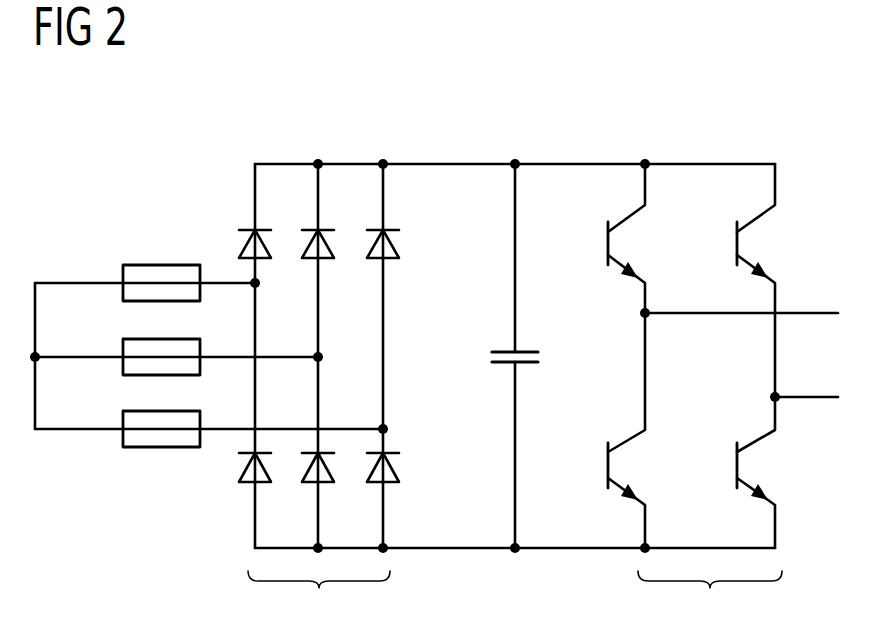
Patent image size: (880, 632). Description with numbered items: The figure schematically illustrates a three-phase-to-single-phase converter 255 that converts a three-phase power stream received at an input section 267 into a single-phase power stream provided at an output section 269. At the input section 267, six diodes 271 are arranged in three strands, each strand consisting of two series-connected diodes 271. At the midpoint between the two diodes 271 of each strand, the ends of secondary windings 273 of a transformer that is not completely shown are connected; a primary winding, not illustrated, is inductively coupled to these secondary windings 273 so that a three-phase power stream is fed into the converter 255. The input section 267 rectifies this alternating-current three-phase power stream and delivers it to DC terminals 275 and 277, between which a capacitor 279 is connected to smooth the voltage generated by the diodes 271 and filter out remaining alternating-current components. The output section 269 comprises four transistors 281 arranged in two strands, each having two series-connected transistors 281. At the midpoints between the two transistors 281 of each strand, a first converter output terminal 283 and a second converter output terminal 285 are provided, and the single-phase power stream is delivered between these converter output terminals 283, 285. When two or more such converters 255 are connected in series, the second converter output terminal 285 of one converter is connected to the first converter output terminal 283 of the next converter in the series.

The 3-phase-to-1-phase converter 255 is at (765, 127).
The input section 267 is at (319, 596).
The output section 269 is at (710, 596).
The diode 271 is at (248, 229).
The secondary winding 273 is at (160, 264).
The DC terminal 275 is at (451, 163).
The DC terminal 277 is at (450, 551).
The capacitor 279 is at (505, 350).
The transistor 281 is at (604, 248).
The first converter output terminal 283 is at (803, 312).
The second converter output terminal 285 is at (804, 396).